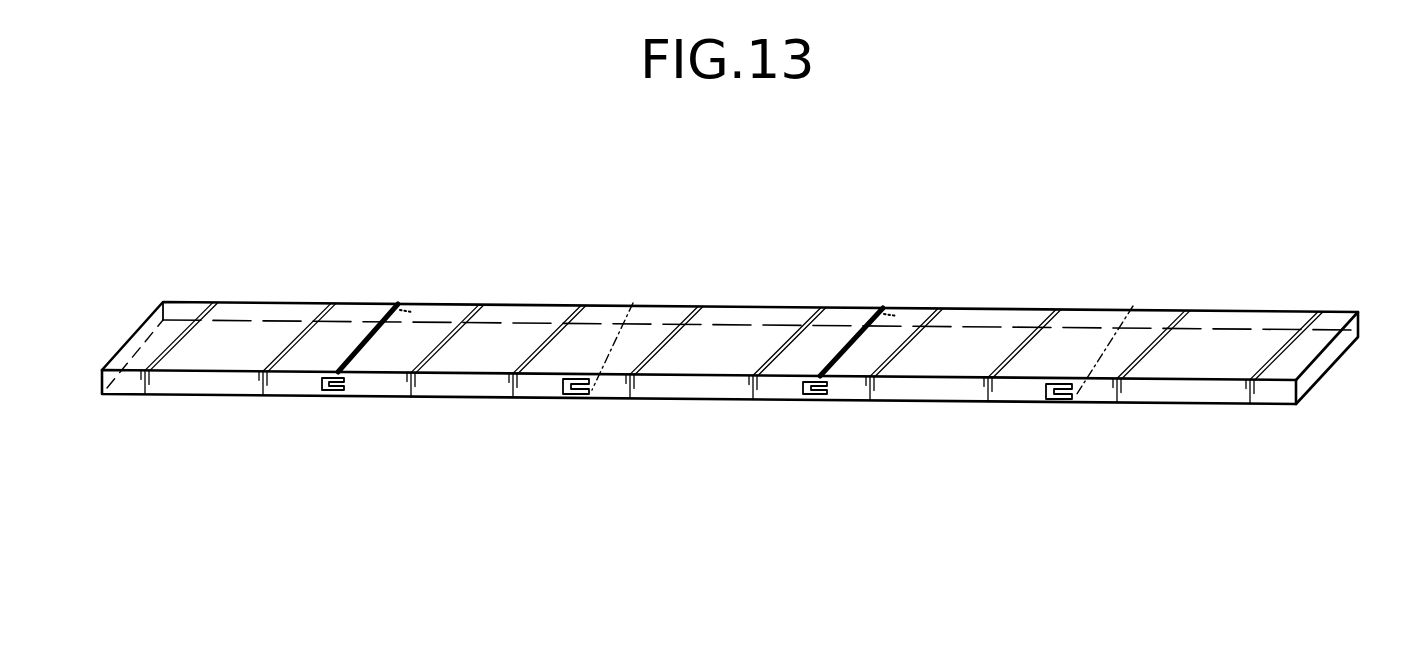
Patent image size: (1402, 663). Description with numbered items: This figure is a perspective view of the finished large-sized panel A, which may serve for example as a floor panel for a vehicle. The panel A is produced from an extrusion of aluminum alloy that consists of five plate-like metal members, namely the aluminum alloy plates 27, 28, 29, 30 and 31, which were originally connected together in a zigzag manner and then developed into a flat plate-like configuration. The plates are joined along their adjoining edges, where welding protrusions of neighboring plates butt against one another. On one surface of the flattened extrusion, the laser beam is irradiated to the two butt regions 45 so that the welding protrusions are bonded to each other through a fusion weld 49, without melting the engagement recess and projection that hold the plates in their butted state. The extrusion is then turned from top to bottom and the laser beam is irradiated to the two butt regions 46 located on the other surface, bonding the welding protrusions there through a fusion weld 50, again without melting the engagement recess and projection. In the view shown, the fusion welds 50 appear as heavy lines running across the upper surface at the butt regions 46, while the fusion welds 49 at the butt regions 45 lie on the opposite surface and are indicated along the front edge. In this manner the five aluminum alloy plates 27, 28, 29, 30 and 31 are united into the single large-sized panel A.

The aluminum alloy plate 27 is at (1235, 308).
The aluminum alloy plate 28 is at (979, 302).
The aluminum alloy plate 29 is at (737, 305).
The aluminum alloy plate 30 is at (491, 295).
The aluminum alloy plate 31 is at (239, 295).
The butt region 45 is at (614, 325).
The butt region 46 is at (412, 304).
The fusion weld 49 is at (580, 395).
The fusion weld 50 is at (385, 303).
The large-sized panel A is at (1318, 285).